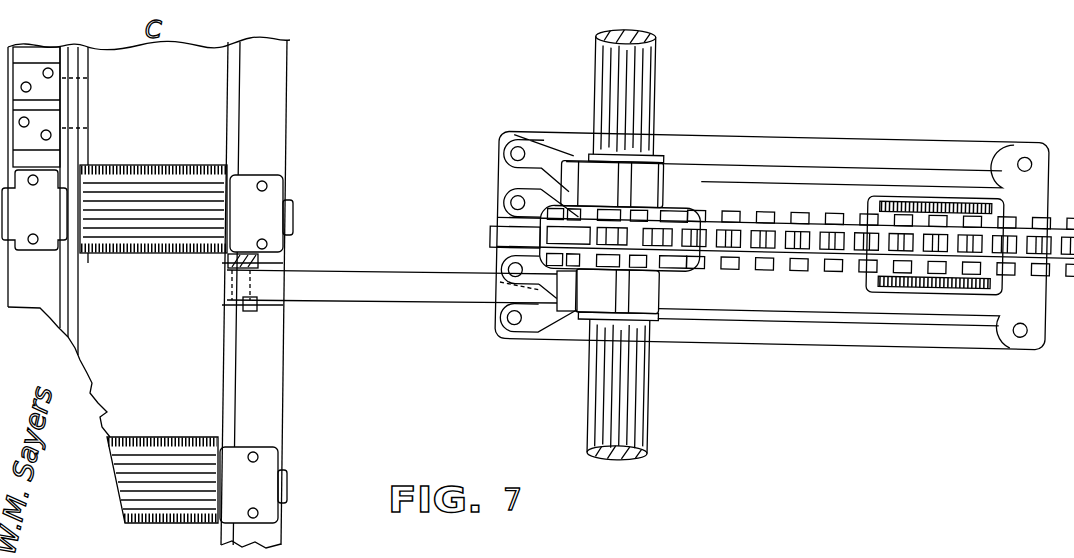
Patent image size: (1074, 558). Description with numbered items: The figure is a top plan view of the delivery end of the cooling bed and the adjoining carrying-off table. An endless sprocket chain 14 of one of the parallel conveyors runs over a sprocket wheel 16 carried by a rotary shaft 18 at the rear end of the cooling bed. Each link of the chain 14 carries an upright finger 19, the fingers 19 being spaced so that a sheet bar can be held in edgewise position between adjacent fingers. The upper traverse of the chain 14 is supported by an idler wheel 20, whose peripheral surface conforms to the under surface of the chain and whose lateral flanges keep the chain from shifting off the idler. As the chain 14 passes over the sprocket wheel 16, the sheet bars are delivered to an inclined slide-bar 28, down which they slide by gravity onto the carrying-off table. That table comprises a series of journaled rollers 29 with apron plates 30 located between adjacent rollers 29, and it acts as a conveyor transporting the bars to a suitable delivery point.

The endless sprocket chain 14 is at (815, 254).
The sprocket wheel 16 is at (679, 216).
The rotary shaft 18 is at (594, 98).
The upright finger 19 is at (842, 231).
The idler wheel 20 is at (987, 213).
The inclined slide-bar 28 is at (392, 279).
The roller 29 is at (151, 250).
The apron plate 30 is at (218, 128).